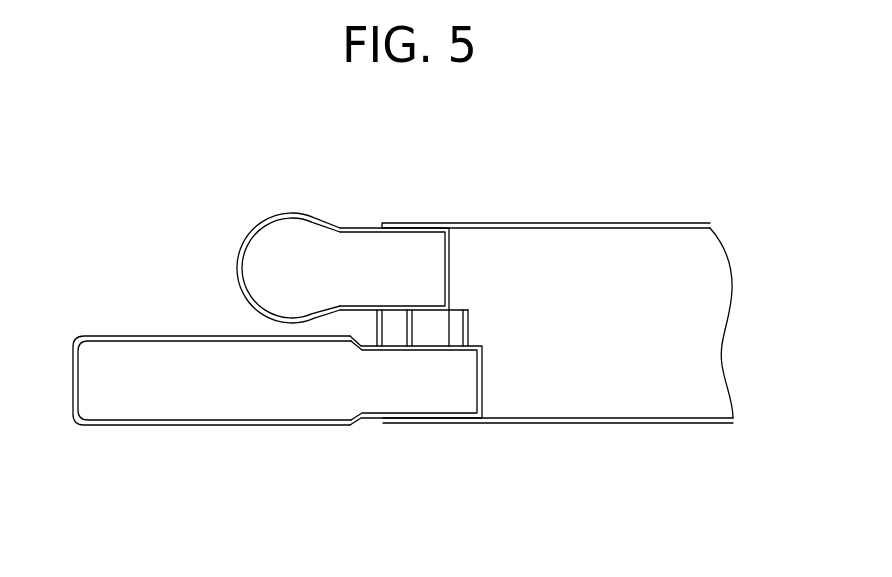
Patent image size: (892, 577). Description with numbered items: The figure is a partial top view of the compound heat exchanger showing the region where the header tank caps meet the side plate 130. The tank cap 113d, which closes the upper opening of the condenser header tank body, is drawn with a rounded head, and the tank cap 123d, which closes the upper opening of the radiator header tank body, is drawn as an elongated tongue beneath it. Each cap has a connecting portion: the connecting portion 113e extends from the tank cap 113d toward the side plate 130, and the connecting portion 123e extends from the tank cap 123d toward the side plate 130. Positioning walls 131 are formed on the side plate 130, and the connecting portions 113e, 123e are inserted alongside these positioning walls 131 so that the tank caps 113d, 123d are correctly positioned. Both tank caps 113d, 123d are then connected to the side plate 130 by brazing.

The tank cap 113d is at (277, 237).
The connecting portion 113e is at (402, 253).
The positioning wall 131 is at (413, 327).
The side plate 130 is at (627, 222).
The tank cap 123d is at (252, 407).
The connecting portion 123e is at (435, 395).